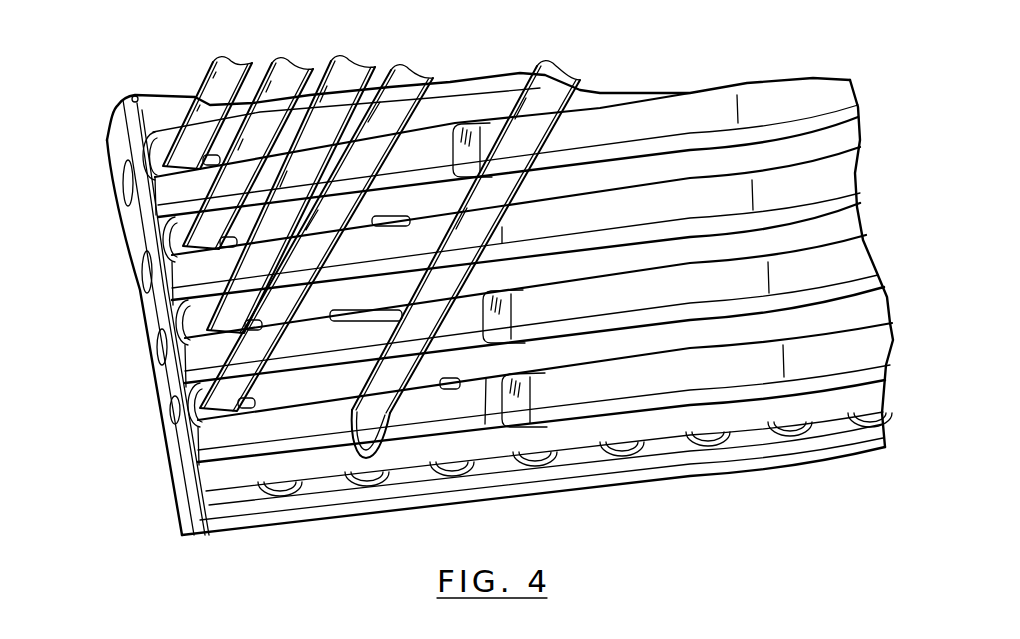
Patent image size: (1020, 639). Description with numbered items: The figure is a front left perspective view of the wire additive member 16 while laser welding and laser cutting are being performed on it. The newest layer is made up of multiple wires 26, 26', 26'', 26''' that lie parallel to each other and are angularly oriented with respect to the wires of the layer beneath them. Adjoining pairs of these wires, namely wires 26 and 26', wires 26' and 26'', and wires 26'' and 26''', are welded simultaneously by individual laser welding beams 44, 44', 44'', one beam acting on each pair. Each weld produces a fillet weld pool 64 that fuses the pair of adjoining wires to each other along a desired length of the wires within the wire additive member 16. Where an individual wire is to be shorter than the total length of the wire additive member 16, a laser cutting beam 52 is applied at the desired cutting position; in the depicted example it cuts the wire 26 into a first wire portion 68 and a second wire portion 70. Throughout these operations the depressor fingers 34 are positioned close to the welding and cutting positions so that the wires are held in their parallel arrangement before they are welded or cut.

The wire additive member 16 is at (834, 48).
The wire 26 is at (545, 455).
The wire 26' is at (478, 317).
The wire 26'' is at (459, 232).
The wire 26''' is at (449, 158).
The depressor fingers 34 is at (667, 377).
The laser welding beam 44 is at (271, 410).
The laser welding beam 44' is at (234, 330).
The laser welding beam 44'' is at (230, 246).
The laser cutting beam 52 is at (375, 420).
The fillet weld pool 64 is at (203, 417).
The first wire portion 68 is at (288, 470).
The second wire portion 70 is at (483, 417).